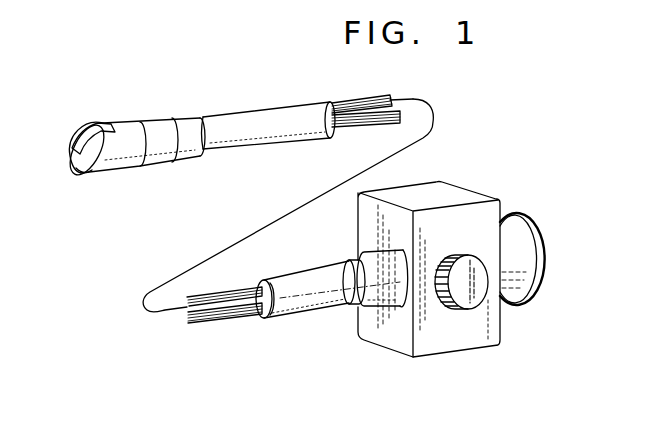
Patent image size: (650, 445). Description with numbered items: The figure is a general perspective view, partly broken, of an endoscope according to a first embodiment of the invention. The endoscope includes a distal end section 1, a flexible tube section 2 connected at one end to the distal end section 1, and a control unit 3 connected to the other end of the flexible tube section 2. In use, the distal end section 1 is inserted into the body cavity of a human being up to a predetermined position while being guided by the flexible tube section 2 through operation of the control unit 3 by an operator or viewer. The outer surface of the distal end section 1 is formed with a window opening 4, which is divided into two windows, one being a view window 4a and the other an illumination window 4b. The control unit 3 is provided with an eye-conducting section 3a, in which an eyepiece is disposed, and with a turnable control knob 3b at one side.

The distal end section 1 is at (148, 124).
The flexible tube section 2 is at (268, 115).
The control unit 3 is at (473, 197).
The eye-conducting section 3a is at (531, 259).
The turnable control knob 3b is at (473, 256).
The window opening 4 is at (32, 160).
The view window 4a is at (81, 172).
The illumination window 4b is at (78, 141).